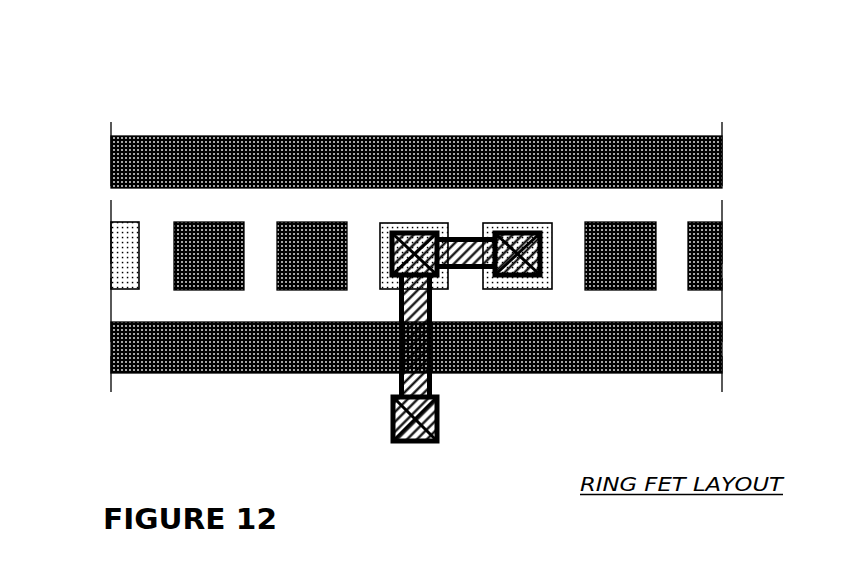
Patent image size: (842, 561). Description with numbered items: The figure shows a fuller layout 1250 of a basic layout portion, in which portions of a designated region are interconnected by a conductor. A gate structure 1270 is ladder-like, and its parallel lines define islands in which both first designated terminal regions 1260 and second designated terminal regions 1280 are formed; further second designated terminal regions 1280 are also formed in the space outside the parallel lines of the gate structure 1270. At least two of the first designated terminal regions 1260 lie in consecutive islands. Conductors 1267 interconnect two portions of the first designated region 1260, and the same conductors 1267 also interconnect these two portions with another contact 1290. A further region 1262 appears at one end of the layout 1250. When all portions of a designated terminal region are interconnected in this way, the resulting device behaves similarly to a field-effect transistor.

The fuller layout 1250 is at (78, 79).
The first designated terminal regions 1260 is at (395, 222).
The contact region 1262 is at (111, 238).
The conductors 1267 is at (470, 268).
The gate structure 1270 is at (118, 303).
The second designated terminal regions 1280 is at (190, 136).
The contact 1290 is at (393, 418).